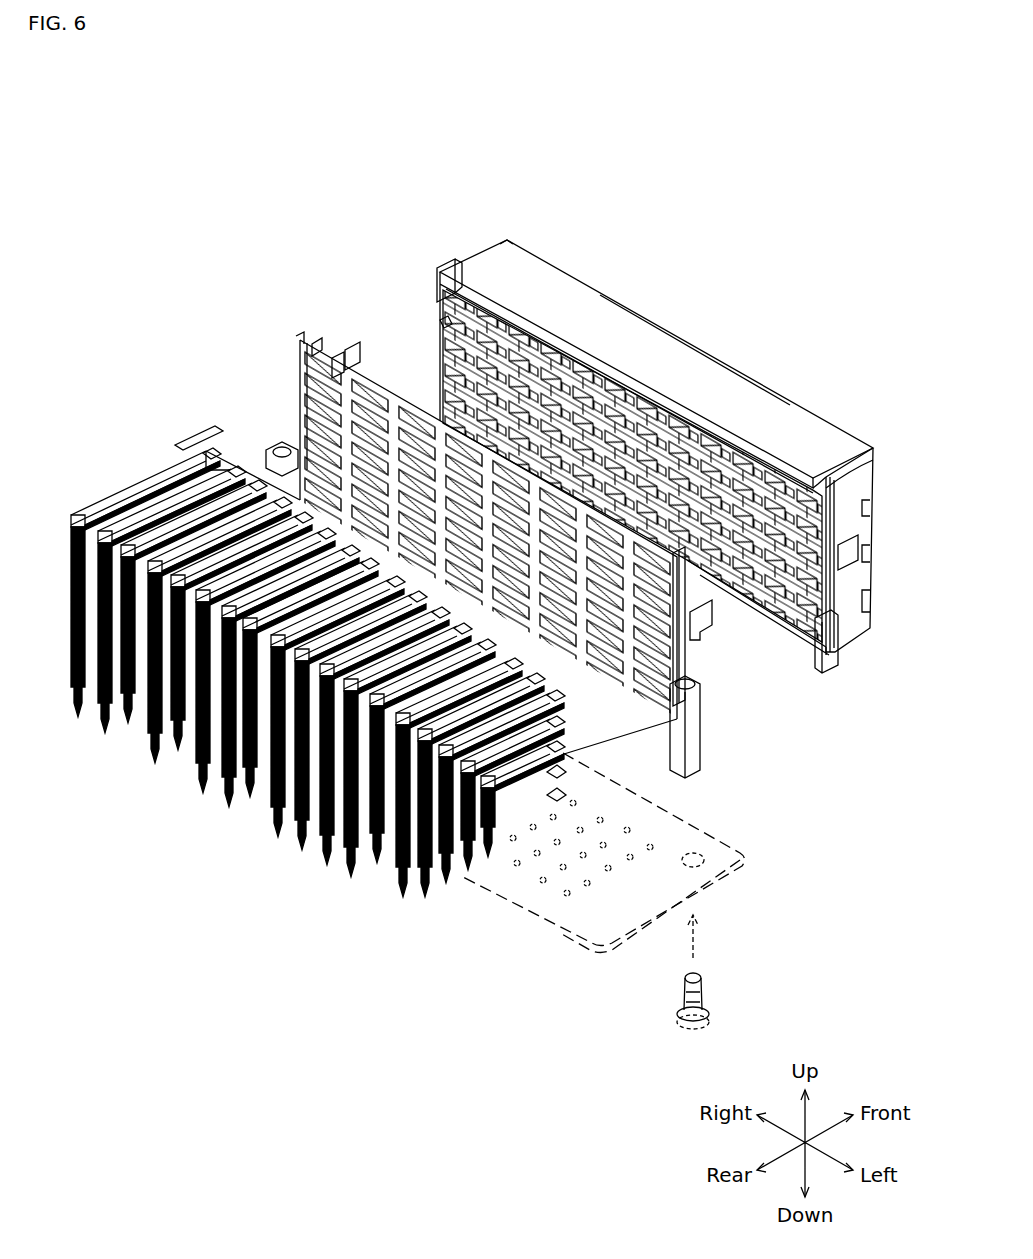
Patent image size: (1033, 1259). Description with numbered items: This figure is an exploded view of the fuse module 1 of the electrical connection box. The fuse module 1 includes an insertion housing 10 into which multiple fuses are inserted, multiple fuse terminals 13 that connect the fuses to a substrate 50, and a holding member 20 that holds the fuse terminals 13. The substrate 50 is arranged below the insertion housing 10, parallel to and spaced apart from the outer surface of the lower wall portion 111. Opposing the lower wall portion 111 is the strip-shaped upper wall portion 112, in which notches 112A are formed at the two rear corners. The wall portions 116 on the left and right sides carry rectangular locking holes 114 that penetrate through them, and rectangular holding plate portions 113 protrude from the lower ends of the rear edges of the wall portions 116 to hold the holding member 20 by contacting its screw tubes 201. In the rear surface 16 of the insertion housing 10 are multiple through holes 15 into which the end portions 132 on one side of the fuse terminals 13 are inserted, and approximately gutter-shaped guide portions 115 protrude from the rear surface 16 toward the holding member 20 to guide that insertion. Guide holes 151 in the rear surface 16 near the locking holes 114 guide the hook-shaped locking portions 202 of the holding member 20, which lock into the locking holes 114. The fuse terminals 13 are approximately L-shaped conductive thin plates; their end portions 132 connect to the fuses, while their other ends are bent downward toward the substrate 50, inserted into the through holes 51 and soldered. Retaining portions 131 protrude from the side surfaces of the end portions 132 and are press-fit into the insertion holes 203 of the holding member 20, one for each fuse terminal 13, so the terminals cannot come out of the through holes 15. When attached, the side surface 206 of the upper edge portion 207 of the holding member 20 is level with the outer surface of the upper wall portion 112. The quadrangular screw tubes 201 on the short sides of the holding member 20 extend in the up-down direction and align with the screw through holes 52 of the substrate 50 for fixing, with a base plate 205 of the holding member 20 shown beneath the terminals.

The fuse module 1 is at (462, 130).
The insertion housing 10 is at (533, 218).
The fuse terminals 13 is at (140, 720).
The through holes 15 is at (740, 470).
The rear surface 16 is at (445, 295).
The holding member 20 is at (305, 345).
The substrate 50 is at (745, 888).
The through holes 51 is at (585, 883).
The screw through holes 52 is at (707, 856).
The lower wall portion 111 is at (855, 652).
The upper wall portion 112 is at (790, 405).
The notches 112A is at (442, 266).
The holding plate portions 113 is at (825, 672).
The locking holes 114 is at (858, 572).
The guide portions 115 is at (860, 525).
The wall portions 116 is at (855, 490).
The retaining portions 131 is at (178, 450).
The end portions 132 is at (185, 455).
The guide holes 151 is at (858, 602).
The screw tubes 201 is at (278, 446).
The locking portions 202 is at (705, 628).
The insertion holes 203 is at (338, 360).
The base plate 205 is at (290, 452).
The side surface 206 is at (315, 348).
The edge portion 207 is at (300, 338).